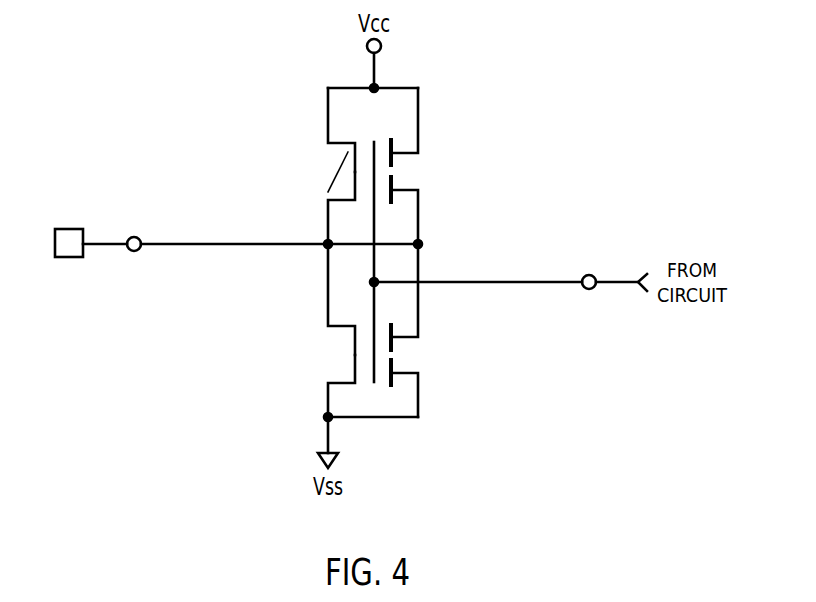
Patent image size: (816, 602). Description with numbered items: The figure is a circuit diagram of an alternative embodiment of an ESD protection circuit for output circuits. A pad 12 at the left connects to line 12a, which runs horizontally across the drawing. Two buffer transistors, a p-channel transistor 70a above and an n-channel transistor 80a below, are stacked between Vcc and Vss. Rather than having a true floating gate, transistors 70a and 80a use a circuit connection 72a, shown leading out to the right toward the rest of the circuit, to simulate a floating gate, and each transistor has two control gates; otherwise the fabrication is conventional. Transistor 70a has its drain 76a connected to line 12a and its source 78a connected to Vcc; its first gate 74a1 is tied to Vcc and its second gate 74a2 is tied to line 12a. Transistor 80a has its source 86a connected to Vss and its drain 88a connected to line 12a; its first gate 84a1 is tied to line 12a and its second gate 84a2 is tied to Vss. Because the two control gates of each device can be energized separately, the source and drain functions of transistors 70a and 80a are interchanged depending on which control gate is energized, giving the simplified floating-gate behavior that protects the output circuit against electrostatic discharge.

The pad 12 is at (61, 227).
The line 12a is at (133, 237).
The transistor 70a is at (414, 143).
The circuit connection 72a is at (585, 275).
The first gate 74a1 is at (434, 127).
The second gate 74a2 is at (434, 210).
The drain 76a is at (321, 198).
The source 78a is at (321, 130).
The transistor 80a is at (413, 367).
The first gate 84a1 is at (434, 297).
The second gate 84a2 is at (434, 388).
The source 86a is at (321, 386).
The drain 88a is at (321, 299).